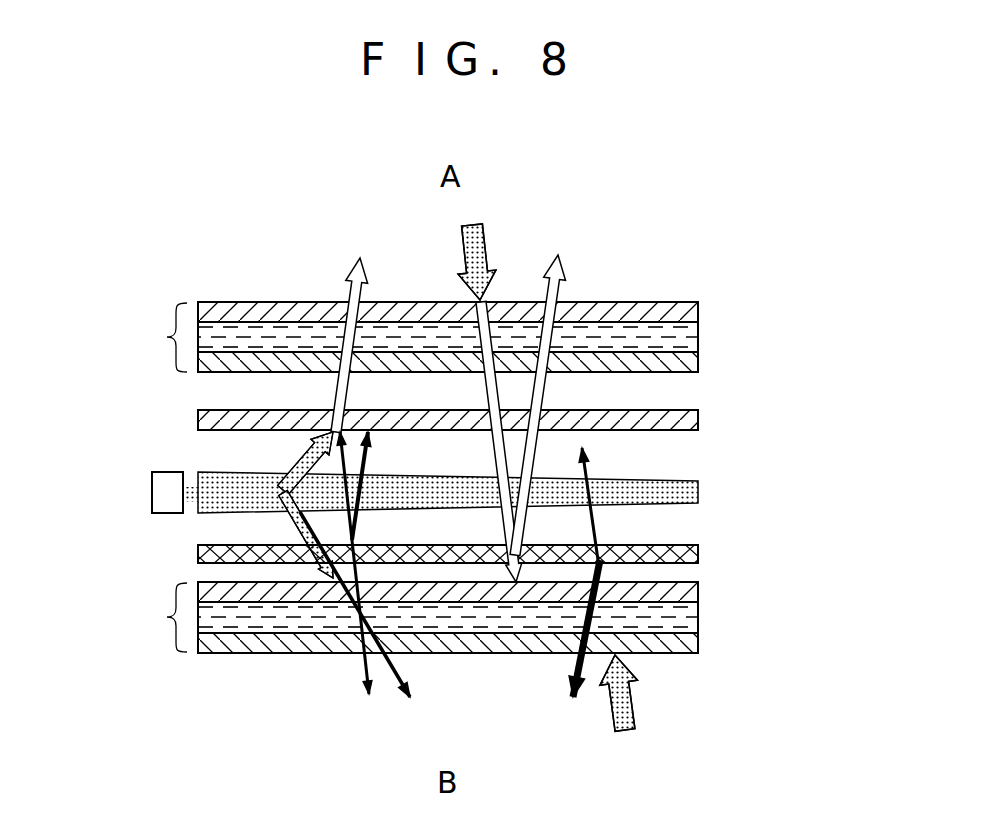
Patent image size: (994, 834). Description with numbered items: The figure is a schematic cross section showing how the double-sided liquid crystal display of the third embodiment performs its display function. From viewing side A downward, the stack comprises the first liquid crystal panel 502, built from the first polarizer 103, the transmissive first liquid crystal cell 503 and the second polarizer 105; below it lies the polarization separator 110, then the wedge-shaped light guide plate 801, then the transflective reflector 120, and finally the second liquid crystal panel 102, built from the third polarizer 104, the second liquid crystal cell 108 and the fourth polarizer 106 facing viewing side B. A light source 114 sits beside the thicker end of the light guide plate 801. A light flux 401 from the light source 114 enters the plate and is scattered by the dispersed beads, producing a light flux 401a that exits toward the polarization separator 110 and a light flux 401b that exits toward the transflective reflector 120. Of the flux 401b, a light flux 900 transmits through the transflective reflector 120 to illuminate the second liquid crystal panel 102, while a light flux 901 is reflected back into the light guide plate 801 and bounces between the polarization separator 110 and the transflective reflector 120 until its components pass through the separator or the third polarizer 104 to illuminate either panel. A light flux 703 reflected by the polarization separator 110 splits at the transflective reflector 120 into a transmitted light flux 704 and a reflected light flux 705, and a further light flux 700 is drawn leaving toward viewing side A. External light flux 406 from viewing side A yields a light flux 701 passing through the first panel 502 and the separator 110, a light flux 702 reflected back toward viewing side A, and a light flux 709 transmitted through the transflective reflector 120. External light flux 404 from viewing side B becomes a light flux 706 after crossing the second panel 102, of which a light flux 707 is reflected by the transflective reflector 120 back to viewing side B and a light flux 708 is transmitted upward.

The second liquid crystal panel 102 is at (160, 632).
The first polarizer 103 is at (698, 310).
The third polarizer 104 is at (698, 588).
The second polarizer 105 is at (698, 360).
The fourth polarizer 106 is at (698, 637).
The second liquid crystal cell 108 is at (698, 613).
The polarization separator 110 is at (698, 413).
The light source 114 is at (150, 492).
The transflective reflector 120 is at (698, 552).
The light flux 401 is at (287, 487).
The light flux 401a is at (288, 466).
The light flux 401b is at (287, 516).
The external light flux 404 is at (638, 717).
The external light flux 406 is at (483, 232).
The first liquid crystal panel 502 is at (160, 352).
The first liquid crystal cell 503 is at (698, 340).
The emitted light 700 is at (350, 276).
The light flux 701 is at (497, 412).
The light flux 702 is at (560, 290).
The light flux 703 is at (356, 470).
The light flux 704 is at (362, 665).
The light flux 705 is at (370, 470).
The light flux 706 is at (613, 617).
The light flux 707 is at (570, 657).
The light flux 708 is at (590, 460).
The light flux 709 is at (478, 603).
The light guide plate 801 is at (698, 490).
The light flux 900 is at (322, 570).
The light flux 901 is at (332, 537).